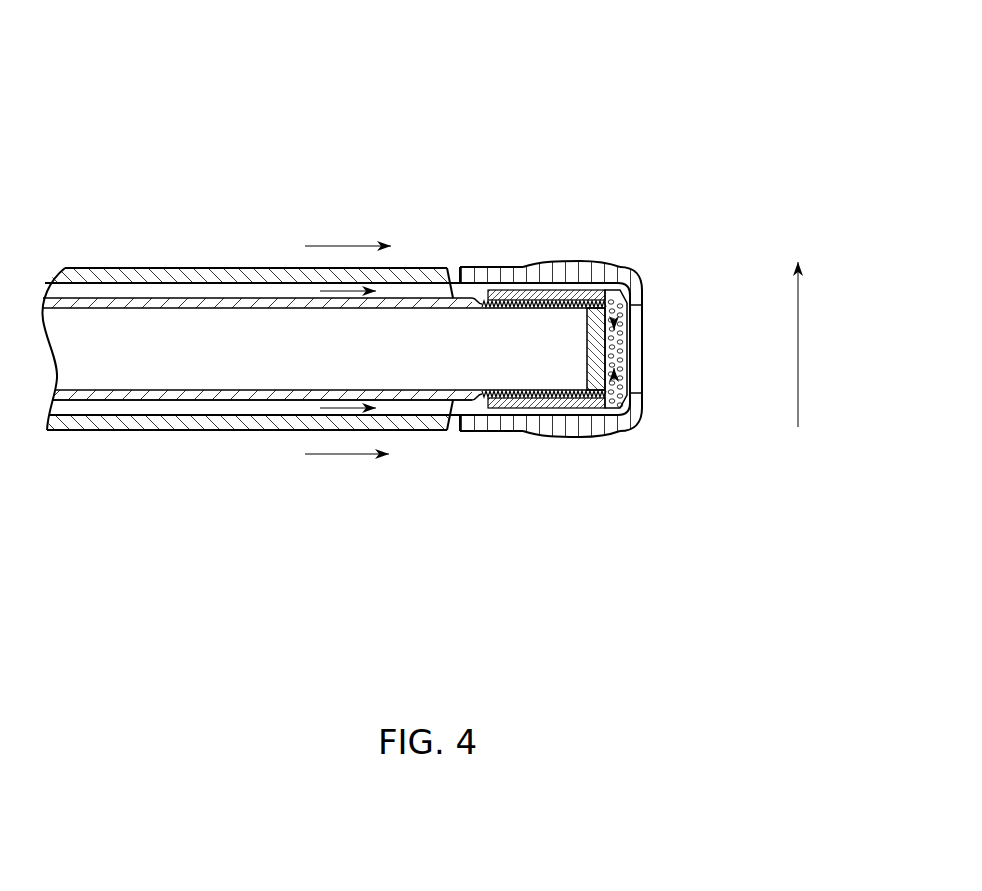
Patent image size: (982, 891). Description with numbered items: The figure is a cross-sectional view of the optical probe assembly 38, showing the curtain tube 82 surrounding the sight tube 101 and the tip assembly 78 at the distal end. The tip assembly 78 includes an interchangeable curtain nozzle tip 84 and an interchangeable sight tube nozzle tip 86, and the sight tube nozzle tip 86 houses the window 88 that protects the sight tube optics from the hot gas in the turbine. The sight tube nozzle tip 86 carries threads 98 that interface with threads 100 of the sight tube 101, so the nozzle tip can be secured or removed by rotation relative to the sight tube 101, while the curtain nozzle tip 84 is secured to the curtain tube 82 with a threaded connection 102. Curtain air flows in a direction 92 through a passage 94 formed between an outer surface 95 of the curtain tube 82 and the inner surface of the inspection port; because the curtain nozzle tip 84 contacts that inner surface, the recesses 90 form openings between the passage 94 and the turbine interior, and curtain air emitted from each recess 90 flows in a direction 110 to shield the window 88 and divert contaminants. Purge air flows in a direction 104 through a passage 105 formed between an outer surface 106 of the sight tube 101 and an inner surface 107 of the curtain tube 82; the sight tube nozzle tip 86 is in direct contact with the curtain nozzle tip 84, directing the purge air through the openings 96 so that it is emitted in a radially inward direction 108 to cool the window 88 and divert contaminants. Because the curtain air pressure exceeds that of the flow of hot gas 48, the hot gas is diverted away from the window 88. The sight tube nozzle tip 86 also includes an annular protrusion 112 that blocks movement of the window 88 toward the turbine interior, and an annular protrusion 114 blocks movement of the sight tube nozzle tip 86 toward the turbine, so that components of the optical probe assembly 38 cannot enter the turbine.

The optical probe assembly 38 is at (344, 103).
The tip assembly 78 is at (577, 176).
The curtain tube 82 is at (262, 268).
The direction of curtain air flow 92 is at (347, 243).
The threaded connection 102 is at (452, 268).
The direction of purge air flow 104 is at (385, 268).
The inner surface of the curtain tube 107 is at (220, 276).
The curtain nozzle tip 84 is at (483, 267).
The threads 98 is at (537, 262).
The recesses 90 is at (565, 262).
The sight tube nozzle tip 86 is at (598, 262).
The window 88 is at (622, 263).
The direction of emitted curtain air 110 is at (663, 283).
The flow of hot gas 48 is at (798, 348).
The radially inward direction 108 is at (643, 322).
The openings 96 is at (641, 338).
The annular protrusion of the curtain tube 114 is at (643, 402).
The outer surface of the sight tube 106 is at (252, 398).
The sight tube 101 is at (140, 400).
The outer surface of the curtain tube 95 is at (172, 416).
The passage 94 is at (226, 462).
The passage 105 is at (440, 432).
The threads 100 is at (557, 438).
The annular protrusion 112 is at (612, 430).